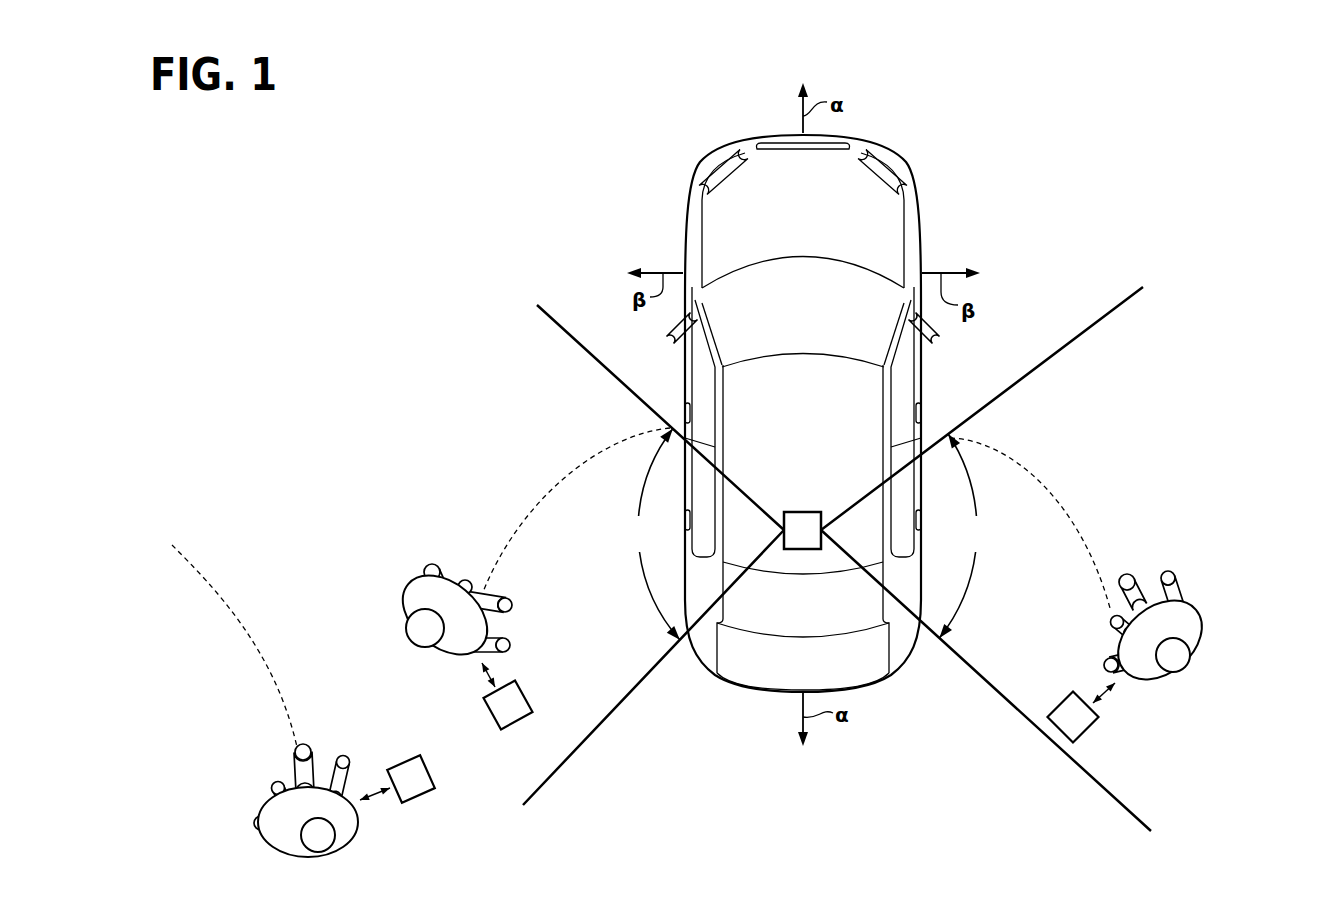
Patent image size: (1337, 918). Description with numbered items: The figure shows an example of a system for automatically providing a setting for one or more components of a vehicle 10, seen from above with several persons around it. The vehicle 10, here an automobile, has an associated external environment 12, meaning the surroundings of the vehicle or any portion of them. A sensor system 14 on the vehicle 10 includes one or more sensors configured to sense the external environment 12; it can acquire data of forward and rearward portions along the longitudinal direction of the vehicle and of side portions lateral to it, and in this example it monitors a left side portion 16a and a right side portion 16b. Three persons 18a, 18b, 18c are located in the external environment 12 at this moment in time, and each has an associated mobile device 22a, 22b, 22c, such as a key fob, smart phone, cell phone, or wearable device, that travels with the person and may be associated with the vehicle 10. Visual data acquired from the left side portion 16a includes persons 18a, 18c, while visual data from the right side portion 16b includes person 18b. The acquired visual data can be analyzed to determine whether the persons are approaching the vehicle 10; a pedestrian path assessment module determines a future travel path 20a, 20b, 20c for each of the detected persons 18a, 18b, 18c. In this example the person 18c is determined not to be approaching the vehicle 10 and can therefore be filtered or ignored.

The vehicle 10 is at (922, 228).
The external environment 12 is at (435, 211).
The sensor system 14 is at (803, 549).
The left side portion 16a is at (653, 555).
The right side portion 16b is at (986, 559).
The person 18a is at (425, 568).
The person 18b is at (1195, 650).
The person 18c is at (335, 852).
The future travel path 20a is at (548, 486).
The future travel path 20b is at (1055, 493).
The future travel path 20c is at (276, 672).
The mobile device 22a is at (520, 690).
The mobile device 22b is at (1085, 733).
The mobile device 22c is at (415, 801).